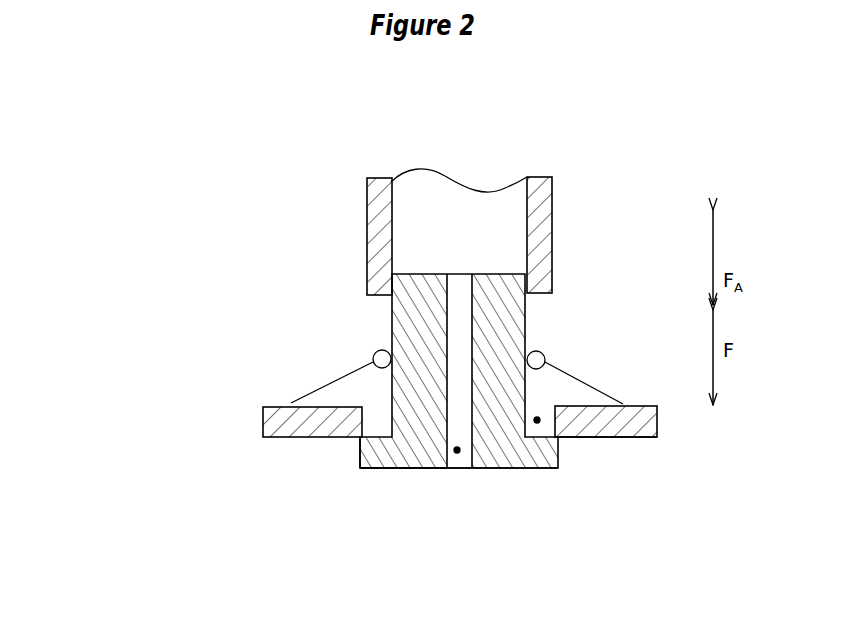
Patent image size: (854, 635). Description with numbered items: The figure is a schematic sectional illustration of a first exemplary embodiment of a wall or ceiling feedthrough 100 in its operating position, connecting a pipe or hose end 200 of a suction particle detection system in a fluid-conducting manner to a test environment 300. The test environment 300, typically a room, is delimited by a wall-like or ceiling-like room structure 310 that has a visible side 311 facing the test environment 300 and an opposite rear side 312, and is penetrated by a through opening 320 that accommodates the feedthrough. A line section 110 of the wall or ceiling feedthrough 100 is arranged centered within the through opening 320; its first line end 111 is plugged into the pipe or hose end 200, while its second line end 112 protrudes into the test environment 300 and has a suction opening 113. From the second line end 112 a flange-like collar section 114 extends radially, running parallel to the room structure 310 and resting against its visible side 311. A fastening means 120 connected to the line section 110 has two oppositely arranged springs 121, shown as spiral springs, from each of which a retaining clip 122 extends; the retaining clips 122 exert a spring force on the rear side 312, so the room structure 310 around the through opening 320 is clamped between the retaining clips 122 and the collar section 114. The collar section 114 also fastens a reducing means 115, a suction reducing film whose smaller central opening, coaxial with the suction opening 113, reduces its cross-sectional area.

The wall or ceiling feedthrough 100 is at (544, 296).
The line section 110 is at (521, 318).
The first line end 111 is at (565, 297).
The second line end 112 is at (518, 490).
The suction opening 113 is at (457, 450).
The collar section 114 is at (357, 455).
The reducing means 115 is at (412, 470).
The fastening means 120 is at (251, 330).
The springs 121 is at (372, 355).
The retaining clip 122 is at (327, 381).
The pipe or hose end 200 is at (537, 177).
The test environment 300 is at (574, 424).
The wall-like or ceiling-like room structure 310 is at (610, 397).
The visible side 311 is at (633, 435).
The rear side 312 is at (555, 405).
The through opening 320 is at (537, 420).